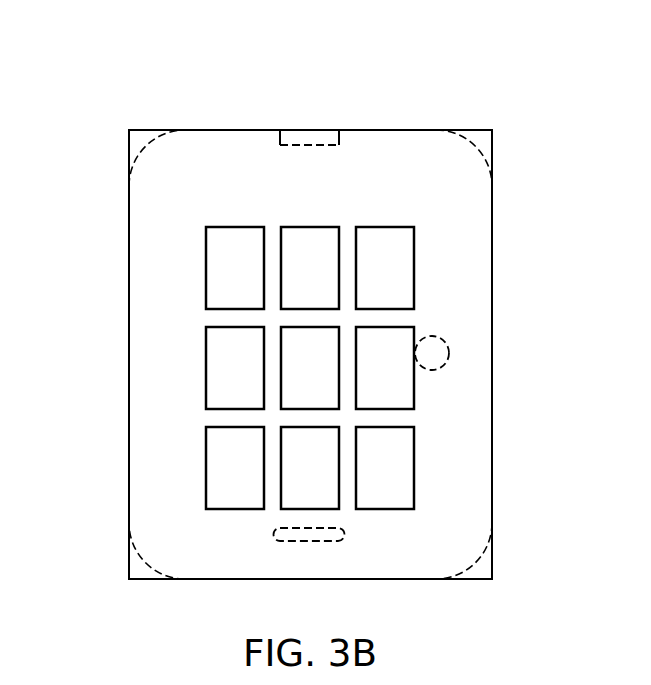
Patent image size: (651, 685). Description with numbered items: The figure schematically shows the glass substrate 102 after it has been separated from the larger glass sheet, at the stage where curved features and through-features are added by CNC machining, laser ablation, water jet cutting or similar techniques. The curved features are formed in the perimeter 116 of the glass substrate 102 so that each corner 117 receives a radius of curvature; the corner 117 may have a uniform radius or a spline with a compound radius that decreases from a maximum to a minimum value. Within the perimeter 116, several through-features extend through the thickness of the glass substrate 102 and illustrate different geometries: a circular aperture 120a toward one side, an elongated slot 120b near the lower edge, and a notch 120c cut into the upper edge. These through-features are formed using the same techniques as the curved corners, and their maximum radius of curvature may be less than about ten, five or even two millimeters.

The glass substrate 102 is at (278, 307).
The perimeter 116 is at (378, 130).
The corner 117 is at (145, 145).
The circular aperture 120a is at (449, 353).
The slot 120b is at (345, 534).
The notch 120c is at (313, 146).